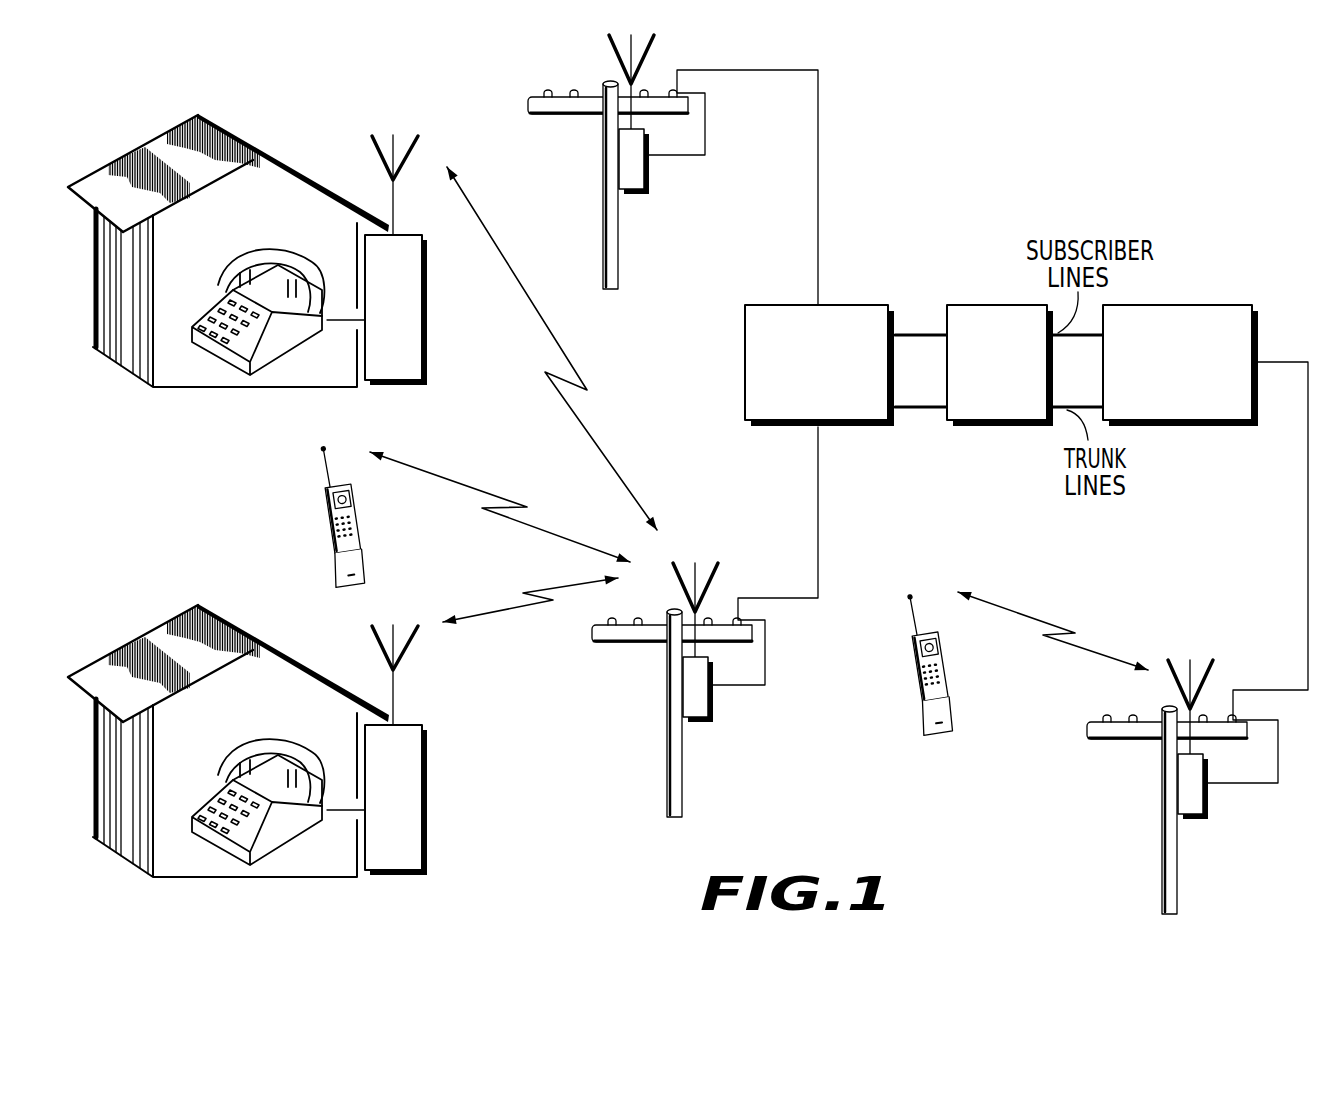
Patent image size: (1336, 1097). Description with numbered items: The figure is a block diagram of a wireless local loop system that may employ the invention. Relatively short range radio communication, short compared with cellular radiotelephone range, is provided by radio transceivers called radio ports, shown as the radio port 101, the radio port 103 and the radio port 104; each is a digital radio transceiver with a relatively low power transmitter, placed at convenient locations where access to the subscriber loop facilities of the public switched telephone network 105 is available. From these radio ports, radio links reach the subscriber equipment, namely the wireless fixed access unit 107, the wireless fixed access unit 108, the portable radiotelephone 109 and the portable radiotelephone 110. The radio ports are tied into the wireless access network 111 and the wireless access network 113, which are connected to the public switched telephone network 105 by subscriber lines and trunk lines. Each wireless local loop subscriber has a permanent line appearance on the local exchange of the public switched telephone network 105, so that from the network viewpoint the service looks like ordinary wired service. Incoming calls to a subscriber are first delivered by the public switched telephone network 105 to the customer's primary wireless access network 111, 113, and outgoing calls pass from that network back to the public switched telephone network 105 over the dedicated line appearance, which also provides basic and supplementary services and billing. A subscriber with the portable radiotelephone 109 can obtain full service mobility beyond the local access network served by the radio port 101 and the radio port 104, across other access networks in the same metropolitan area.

The radio port 101 is at (703, 722).
The radio port 103 is at (1210, 812).
The radio port 104 is at (637, 192).
The public switched telephone network 105 is at (1000, 305).
The wireless fixed access unit 107 is at (430, 750).
The wireless fixed access unit 108 is at (428, 373).
The portable radiotelephone 109 is at (325, 528).
The portable radiotelephone 110 is at (942, 727).
The wireless access network 111 is at (833, 427).
The wireless access network 113 is at (1257, 312).